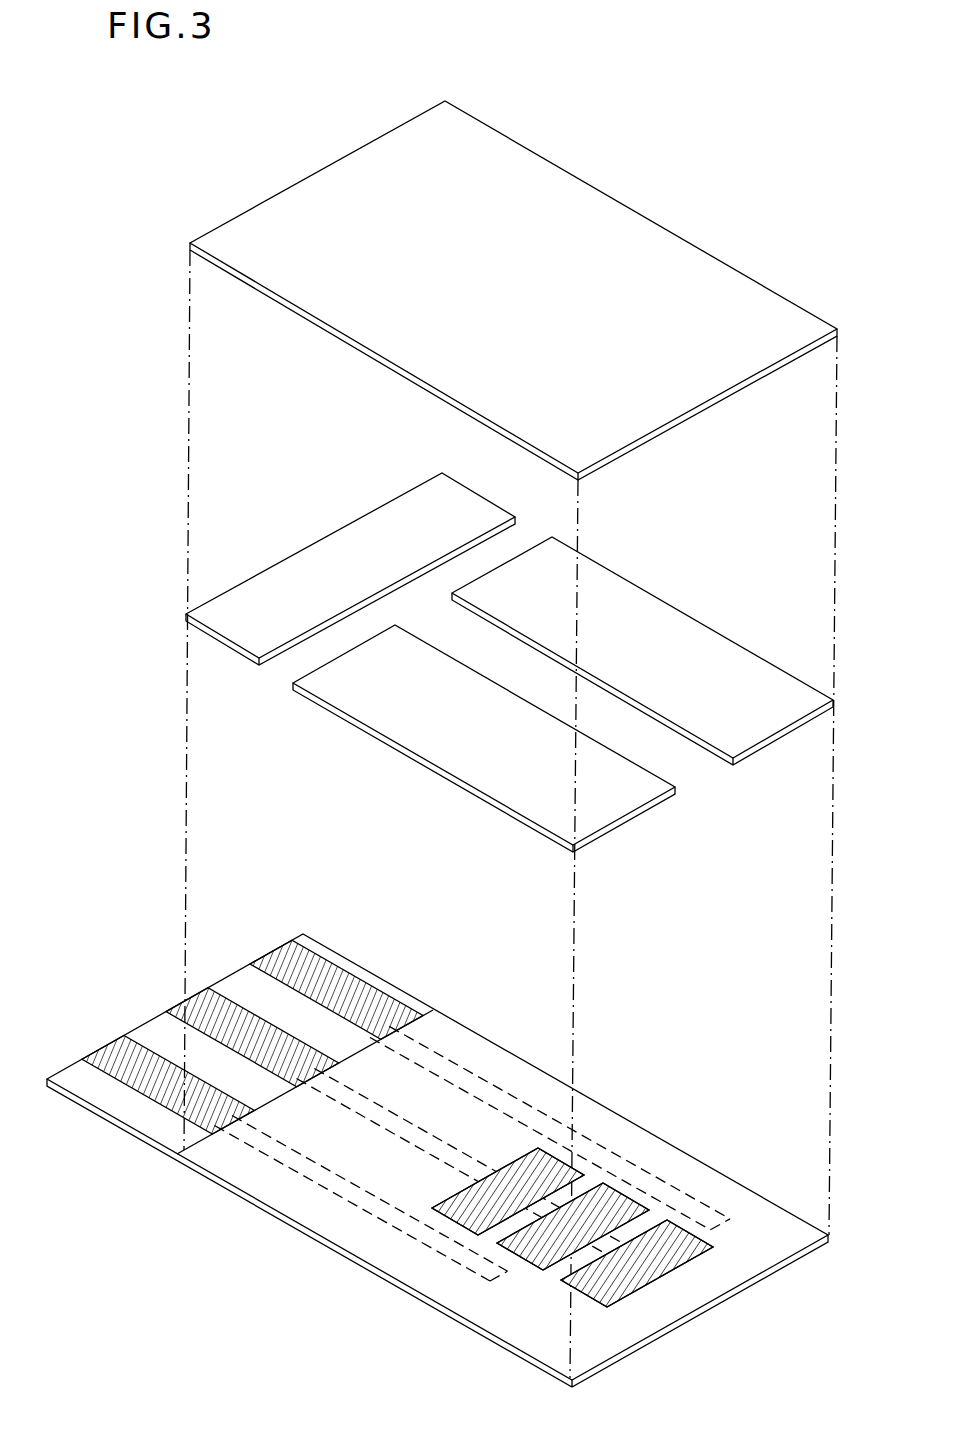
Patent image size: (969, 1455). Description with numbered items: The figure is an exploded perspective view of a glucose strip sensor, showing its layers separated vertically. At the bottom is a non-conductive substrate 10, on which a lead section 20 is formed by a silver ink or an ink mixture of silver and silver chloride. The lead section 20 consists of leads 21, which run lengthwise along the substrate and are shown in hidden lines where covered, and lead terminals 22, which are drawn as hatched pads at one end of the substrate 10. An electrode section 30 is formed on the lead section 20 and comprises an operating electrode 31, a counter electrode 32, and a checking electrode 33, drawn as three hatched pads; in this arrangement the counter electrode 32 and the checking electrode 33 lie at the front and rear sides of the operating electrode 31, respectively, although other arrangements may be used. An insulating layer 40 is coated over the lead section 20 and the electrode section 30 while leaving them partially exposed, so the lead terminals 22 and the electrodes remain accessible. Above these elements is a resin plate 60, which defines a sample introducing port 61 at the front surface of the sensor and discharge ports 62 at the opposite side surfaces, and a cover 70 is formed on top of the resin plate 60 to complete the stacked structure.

The non-conductive substrate 10 is at (322, 1238).
The lead section 20 is at (406, 1072).
The leads 21 is at (443, 1062).
The lead terminals 22 is at (348, 1010).
The electrode section 30 is at (590, 1155).
The operating electrode 31 is at (612, 1225).
The counter electrode 32 is at (542, 1170).
The checking electrode 33 is at (667, 1252).
The insulating layer 40 is at (488, 1132).
The resin plate 60 is at (325, 548).
The sample introducing port 61 is at (680, 758).
The discharge ports 62 is at (290, 664).
The cover 70 is at (575, 212).